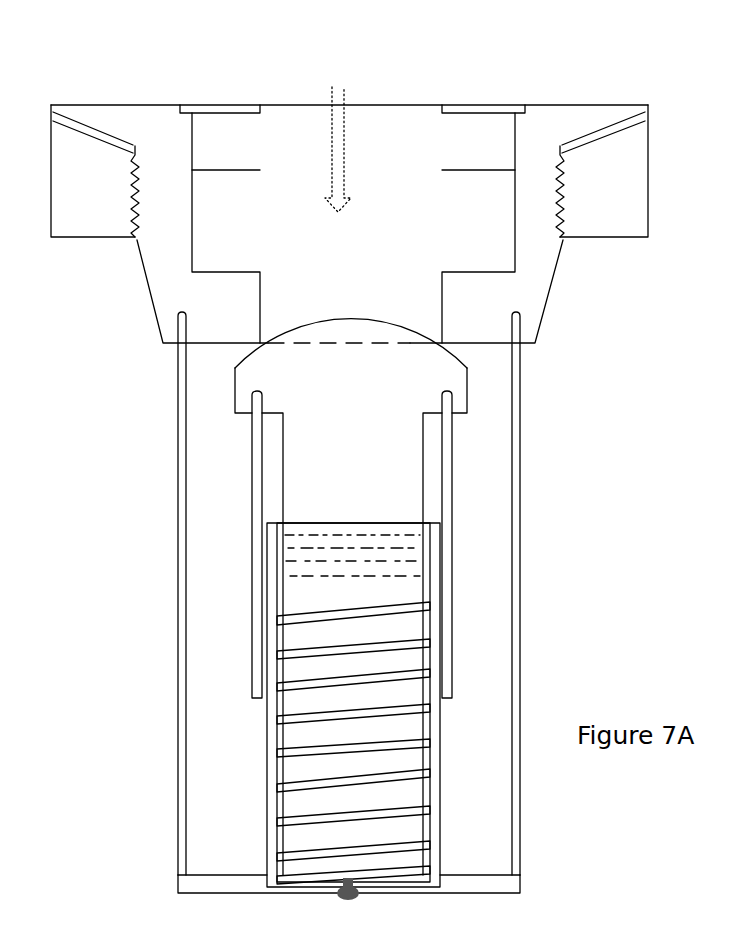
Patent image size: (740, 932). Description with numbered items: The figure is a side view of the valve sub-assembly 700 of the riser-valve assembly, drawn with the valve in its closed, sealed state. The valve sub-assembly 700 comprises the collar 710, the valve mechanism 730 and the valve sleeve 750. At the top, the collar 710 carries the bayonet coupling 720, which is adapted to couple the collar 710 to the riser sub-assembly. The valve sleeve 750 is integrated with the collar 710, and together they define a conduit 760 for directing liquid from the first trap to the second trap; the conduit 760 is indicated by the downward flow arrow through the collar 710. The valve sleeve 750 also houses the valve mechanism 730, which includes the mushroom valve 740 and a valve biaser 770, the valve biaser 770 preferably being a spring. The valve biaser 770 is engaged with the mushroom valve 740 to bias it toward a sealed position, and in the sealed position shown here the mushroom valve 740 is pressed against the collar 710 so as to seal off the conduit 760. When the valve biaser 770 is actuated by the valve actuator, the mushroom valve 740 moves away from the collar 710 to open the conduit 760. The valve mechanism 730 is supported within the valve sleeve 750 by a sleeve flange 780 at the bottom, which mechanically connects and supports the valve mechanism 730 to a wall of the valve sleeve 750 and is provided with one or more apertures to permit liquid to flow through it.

The valve sub-assembly 700 is at (561, 50).
The collar 710 is at (150, 262).
The bayonet coupling 720 is at (228, 118).
The valve mechanism 730 is at (243, 630).
The mushroom valve 740 is at (283, 352).
The valve sleeve 750 is at (180, 493).
The conduit 760 is at (338, 138).
The valve biaser 770 is at (293, 782).
The sleeve flange 780 is at (208, 885).